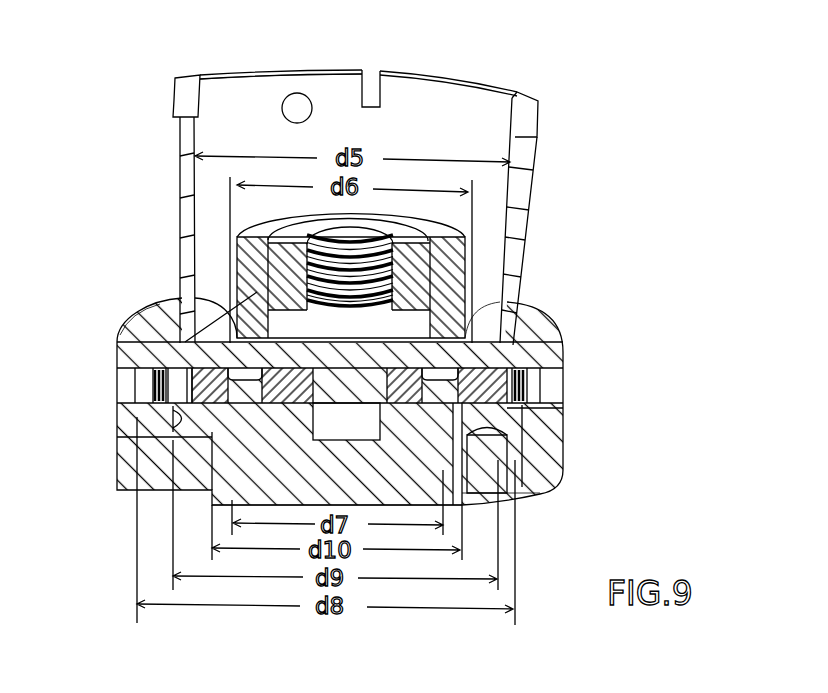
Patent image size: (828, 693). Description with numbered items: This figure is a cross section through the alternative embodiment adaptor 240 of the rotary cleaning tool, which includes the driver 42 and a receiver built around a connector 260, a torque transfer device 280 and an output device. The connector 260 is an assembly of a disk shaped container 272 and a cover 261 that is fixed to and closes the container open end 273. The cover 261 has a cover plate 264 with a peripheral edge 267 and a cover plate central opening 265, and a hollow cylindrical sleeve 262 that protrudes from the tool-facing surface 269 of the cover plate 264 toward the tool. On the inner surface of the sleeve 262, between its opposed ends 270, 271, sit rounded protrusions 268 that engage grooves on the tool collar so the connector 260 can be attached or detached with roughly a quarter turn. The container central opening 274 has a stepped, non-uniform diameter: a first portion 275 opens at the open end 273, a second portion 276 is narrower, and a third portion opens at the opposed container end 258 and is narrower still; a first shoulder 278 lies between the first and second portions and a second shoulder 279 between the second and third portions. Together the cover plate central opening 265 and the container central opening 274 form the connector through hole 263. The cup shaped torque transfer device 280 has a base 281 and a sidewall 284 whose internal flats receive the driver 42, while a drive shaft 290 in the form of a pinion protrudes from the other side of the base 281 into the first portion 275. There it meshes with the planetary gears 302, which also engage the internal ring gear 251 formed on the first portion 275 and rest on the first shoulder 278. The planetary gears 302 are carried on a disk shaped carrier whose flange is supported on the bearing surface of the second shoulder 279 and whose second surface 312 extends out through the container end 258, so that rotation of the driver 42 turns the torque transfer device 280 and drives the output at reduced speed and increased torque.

The alternative embodiment adaptor 240 is at (43, 79).
The protrusion 268 is at (298, 108).
The connector through hole 263 is at (445, 138).
The sleeve end 270 is at (520, 93).
The sleeve 262 is at (528, 148).
The driver 42 is at (455, 207).
The torque transfer device 280 is at (455, 268).
The cover plate central opening 265 is at (458, 338).
The connector 260 is at (537, 321).
The cover 261 is at (340, 330).
The planetary gear 302 is at (533, 342).
The cover plate 264 is at (563, 356).
The internal ring gear 251 is at (524, 400).
The container 272 is at (559, 426).
The second shoulder 279 is at (545, 441).
The container central opening 274 is at (457, 470).
The drive shaft 290 is at (450, 497).
The second surface 312 is at (440, 482).
The sidewall 284 is at (245, 262).
The base 281 is at (268, 318).
The sleeve end 271 is at (178, 335).
The tool-facing surface 269 is at (137, 323).
The peripheral edge 267 is at (115, 340).
The container open end 273 is at (117, 344).
The first portion 275 is at (137, 392).
The first shoulder 278 is at (158, 400).
The second portion 276 is at (137, 422).
The container end 258 is at (121, 500).